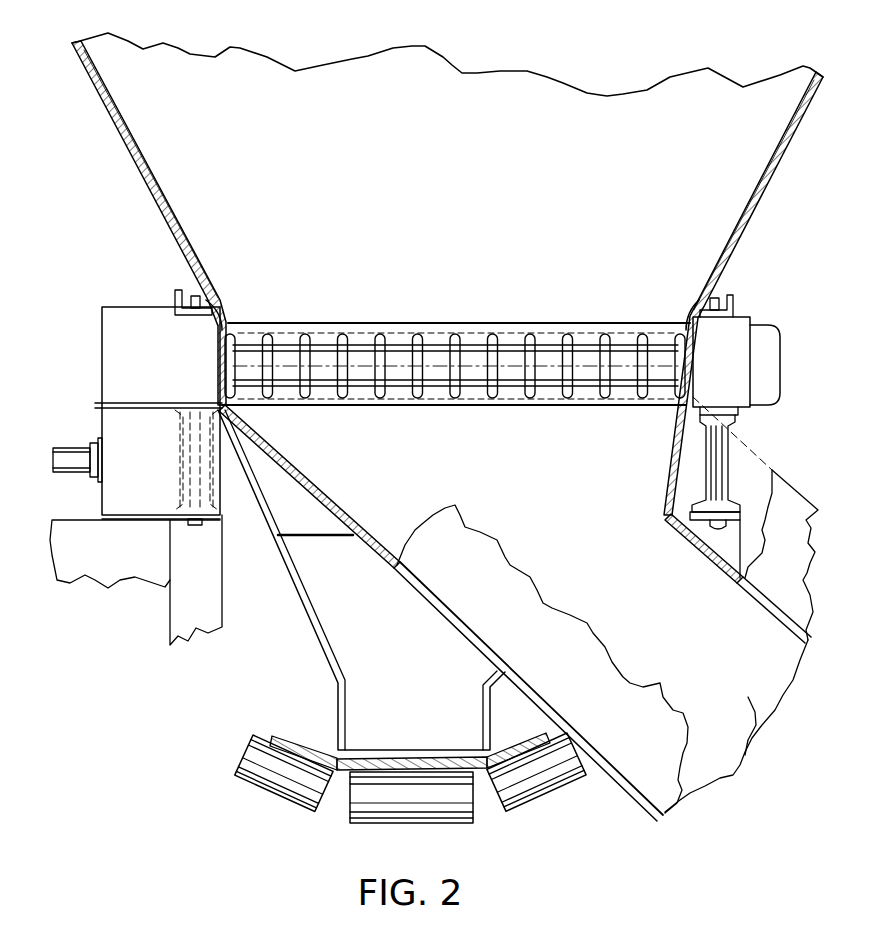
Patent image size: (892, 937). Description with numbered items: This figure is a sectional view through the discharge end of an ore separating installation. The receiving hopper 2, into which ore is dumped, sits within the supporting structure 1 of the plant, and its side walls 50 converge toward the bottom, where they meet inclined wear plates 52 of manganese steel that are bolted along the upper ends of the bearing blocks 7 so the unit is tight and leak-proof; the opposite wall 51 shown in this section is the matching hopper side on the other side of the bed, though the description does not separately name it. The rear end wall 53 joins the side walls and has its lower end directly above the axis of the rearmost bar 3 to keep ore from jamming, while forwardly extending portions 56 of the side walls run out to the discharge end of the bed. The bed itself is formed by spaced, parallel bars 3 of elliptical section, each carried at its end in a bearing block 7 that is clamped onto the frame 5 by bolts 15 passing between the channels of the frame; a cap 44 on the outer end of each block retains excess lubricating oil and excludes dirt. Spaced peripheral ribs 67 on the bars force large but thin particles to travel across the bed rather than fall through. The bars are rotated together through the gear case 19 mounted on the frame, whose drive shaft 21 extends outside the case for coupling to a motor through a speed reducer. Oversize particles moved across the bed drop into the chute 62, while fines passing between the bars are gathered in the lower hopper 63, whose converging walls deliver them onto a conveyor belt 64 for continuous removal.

The supporting structure 1 is at (730, 537).
The receiving hopper 2 is at (371, 70).
The bars 3 is at (403, 352).
The frame 5 is at (710, 455).
The bearing block 7 is at (720, 333).
The bolts 15 is at (196, 300).
The gear case 19 is at (115, 361).
The drive shaft 21 is at (72, 455).
The cap 44 is at (768, 352).
The side walls 50 is at (757, 173).
The left hopper wall 51 is at (165, 197).
The wear plates 52 is at (225, 300).
The rear end wall 53 is at (456, 284).
The forwardly extending portions 56 is at (180, 236).
The chute 62 is at (675, 736).
The hopper 63 is at (328, 640).
The conveyor belt 64 is at (395, 760).
The peripheral ribs 67 is at (500, 338).